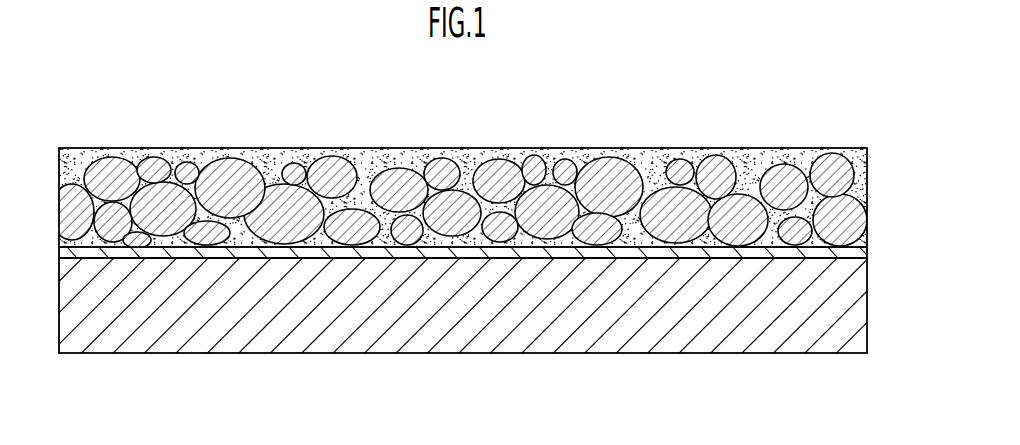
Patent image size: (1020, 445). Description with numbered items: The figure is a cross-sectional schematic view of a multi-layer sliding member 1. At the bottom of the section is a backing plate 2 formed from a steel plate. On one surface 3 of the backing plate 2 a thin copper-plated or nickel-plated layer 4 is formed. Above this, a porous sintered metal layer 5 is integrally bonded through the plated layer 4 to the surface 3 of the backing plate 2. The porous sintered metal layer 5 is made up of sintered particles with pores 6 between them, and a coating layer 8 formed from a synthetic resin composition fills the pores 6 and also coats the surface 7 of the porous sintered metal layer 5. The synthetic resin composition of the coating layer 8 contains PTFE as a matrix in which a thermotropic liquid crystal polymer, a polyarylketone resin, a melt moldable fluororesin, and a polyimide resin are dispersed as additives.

The multi-layer sliding member 1 is at (155, 128).
The backing plate 2 is at (418, 338).
The surface 3 is at (743, 245).
The copper-plated or nickel-plated layer 4 is at (857, 251).
The porous sintered metal layer 5 is at (608, 172).
The pores 6 is at (363, 205).
The surface 7 is at (440, 153).
The coating layer 8 is at (505, 158).